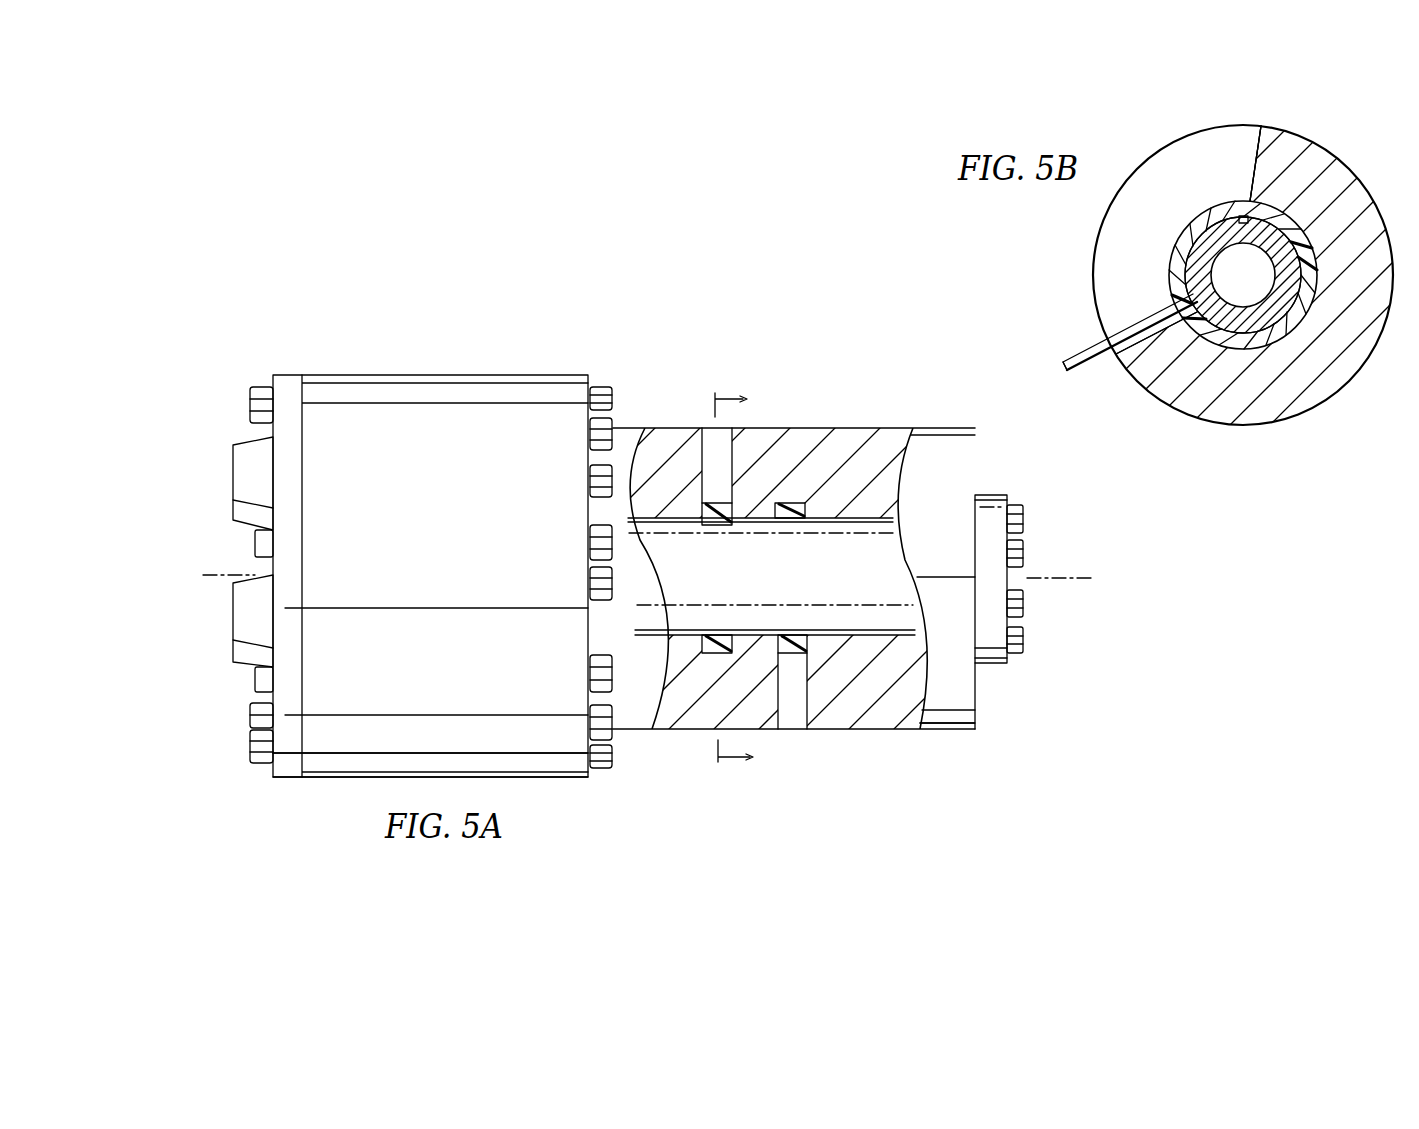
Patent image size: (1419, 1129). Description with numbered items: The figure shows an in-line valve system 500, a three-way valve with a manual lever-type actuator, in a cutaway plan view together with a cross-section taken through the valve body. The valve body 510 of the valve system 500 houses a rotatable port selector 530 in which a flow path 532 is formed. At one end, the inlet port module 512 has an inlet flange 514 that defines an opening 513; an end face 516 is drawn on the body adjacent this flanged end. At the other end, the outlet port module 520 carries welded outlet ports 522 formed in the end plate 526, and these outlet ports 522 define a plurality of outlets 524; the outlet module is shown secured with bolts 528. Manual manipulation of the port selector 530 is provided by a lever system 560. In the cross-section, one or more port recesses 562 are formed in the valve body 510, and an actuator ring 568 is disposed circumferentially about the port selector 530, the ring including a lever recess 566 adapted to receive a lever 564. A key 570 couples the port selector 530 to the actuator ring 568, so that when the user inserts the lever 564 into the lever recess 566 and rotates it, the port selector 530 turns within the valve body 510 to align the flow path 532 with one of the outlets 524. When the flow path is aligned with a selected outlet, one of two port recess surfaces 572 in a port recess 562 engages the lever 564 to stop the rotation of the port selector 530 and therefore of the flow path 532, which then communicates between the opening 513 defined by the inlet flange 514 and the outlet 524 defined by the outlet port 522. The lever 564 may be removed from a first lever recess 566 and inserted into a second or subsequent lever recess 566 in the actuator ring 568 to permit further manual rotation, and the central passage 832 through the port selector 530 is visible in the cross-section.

In FIG. 5A, the in-line valve system 500 is at (396, 266).
In FIG. 5A, the valve body 510 is at (636, 330).
In FIG. 5A, the inlet port module 512 is at (934, 418).
In FIG. 5B, the inlet port module 512 is at (1265, 437).
In FIG. 5A, the opening 513 is at (1037, 588).
In FIG. 5A, the inlet flange 514 is at (993, 492).
In FIG. 5A, the end face 516 is at (985, 688).
In FIG. 5A, the outlet port module 520 is at (334, 348).
In FIG. 5A, the outlet port 522 is at (245, 527).
In FIG. 5A, the outlet 524 is at (233, 470).
In FIG. 5A, the end plate 526 is at (285, 778).
In FIG. 5A, the bolt 528 is at (250, 395).
In FIG. 5B, the port selector 530 is at (1193, 273).
In FIG. 5A, the flow path 532 is at (884, 588).
In FIG. 5B, the lever system 560 is at (1120, 158).
In FIG. 5A, the port recess 562 is at (706, 430).
In FIG. 5B, the port recess 562 is at (1115, 215).
In FIG. 5B, the lever 564 is at (1090, 366).
In FIG. 5B, the lever recess 566 is at (1196, 338).
In FIG. 5A, the actuator ring 568 is at (795, 520).
In FIG. 5B, the actuator ring 568 is at (1190, 222).
In FIG. 5A, the key 570 is at (712, 527).
In FIG. 5B, the key 570 is at (1242, 213).
In FIG. 5B, the port recess surface 572 is at (1256, 125).
In FIG. 5B, the fluid passage 832 is at (1261, 291).